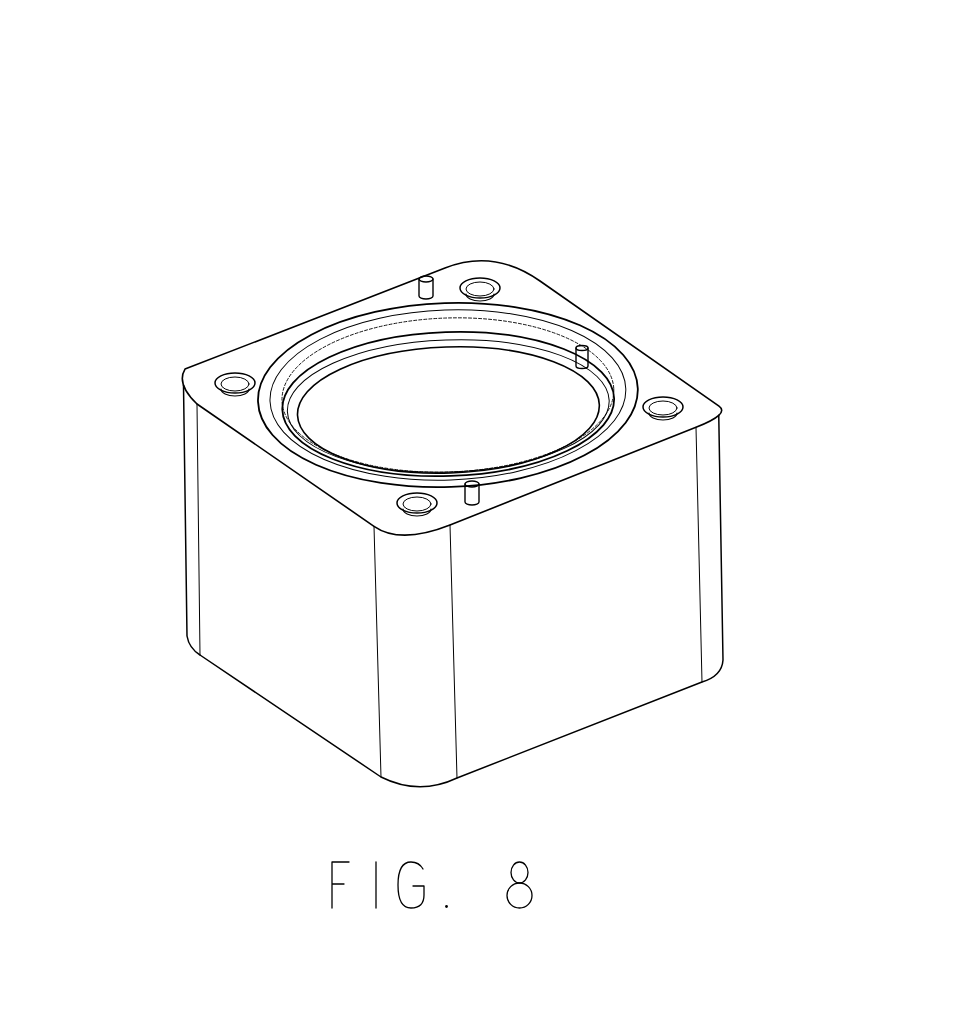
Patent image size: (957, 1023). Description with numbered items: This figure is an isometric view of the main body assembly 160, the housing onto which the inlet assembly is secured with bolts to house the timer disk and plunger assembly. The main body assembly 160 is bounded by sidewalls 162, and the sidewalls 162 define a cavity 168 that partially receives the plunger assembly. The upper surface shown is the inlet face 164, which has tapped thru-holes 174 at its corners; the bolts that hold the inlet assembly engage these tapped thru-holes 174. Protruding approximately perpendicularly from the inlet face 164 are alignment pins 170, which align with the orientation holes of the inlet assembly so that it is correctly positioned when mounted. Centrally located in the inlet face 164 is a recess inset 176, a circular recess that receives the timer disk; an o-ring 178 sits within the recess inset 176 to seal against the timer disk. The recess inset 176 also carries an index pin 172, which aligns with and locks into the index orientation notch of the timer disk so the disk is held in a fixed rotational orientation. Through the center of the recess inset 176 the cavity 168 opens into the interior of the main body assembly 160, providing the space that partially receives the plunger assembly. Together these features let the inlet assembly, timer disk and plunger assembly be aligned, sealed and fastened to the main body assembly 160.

The main body assembly 160 is at (457, 401).
The sidewalls 162 is at (389, 586).
The inlet face 164 is at (451, 355).
The cavity 168 is at (496, 339).
The alignment pins 170 is at (638, 407).
The index pin 172 is at (523, 357).
The tapped thru-holes 174 is at (533, 397).
The recess inset 176 is at (396, 383).
The o-ring 178 is at (548, 382).